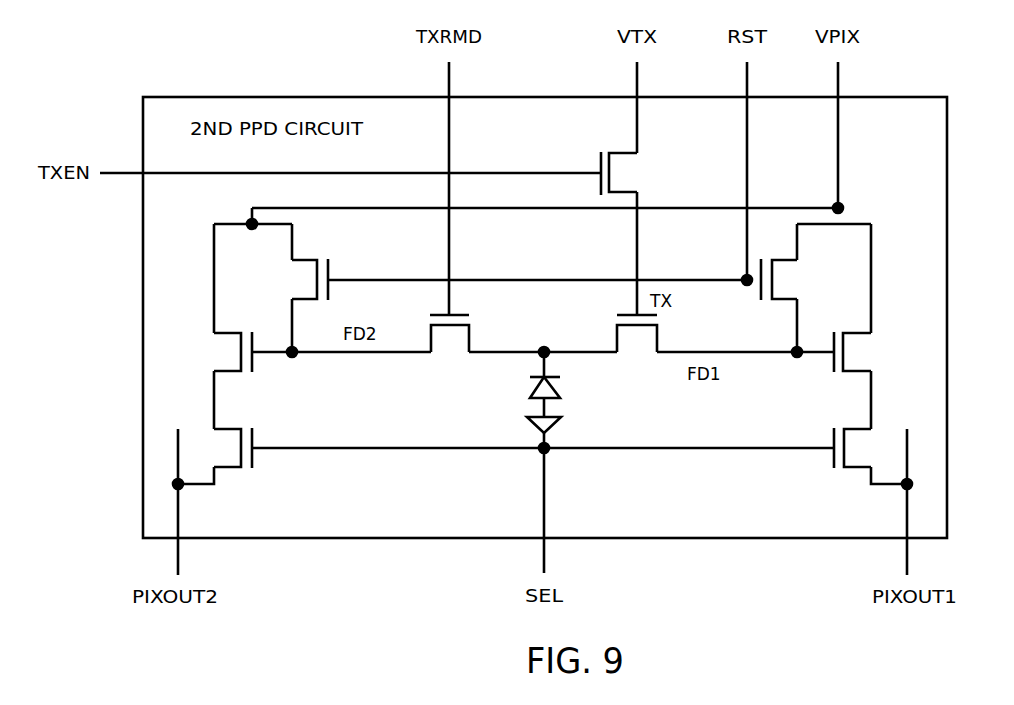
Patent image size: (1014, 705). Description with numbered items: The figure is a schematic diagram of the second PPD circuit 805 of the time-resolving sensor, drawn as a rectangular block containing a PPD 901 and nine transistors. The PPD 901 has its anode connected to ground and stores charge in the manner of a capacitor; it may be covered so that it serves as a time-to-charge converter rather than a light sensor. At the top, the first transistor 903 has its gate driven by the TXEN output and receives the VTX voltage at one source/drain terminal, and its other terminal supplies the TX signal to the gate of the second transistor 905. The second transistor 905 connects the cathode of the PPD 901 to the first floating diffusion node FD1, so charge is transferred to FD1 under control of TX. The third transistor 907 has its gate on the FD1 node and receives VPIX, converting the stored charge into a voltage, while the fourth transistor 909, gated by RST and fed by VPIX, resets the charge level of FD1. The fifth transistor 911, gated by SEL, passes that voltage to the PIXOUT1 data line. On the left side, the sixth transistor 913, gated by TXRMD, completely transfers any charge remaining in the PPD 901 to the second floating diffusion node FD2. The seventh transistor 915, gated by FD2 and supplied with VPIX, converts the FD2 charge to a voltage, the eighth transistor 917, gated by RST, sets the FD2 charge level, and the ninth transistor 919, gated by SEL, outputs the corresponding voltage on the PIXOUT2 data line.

The second PPD circuit 805 is at (361, 539).
The PPD 901 is at (568, 400).
The first transistor 903 is at (628, 173).
The second transistor 905 is at (626, 321).
The third transistor 907 is at (862, 352).
The fourth transistor 909 is at (789, 279).
The fifth transistor 911 is at (861, 448).
The sixth transistor 913 is at (437, 321).
The seventh transistor 915 is at (222, 352).
The eighth transistor 917 is at (300, 279).
The ninth transistor 919 is at (226, 448).